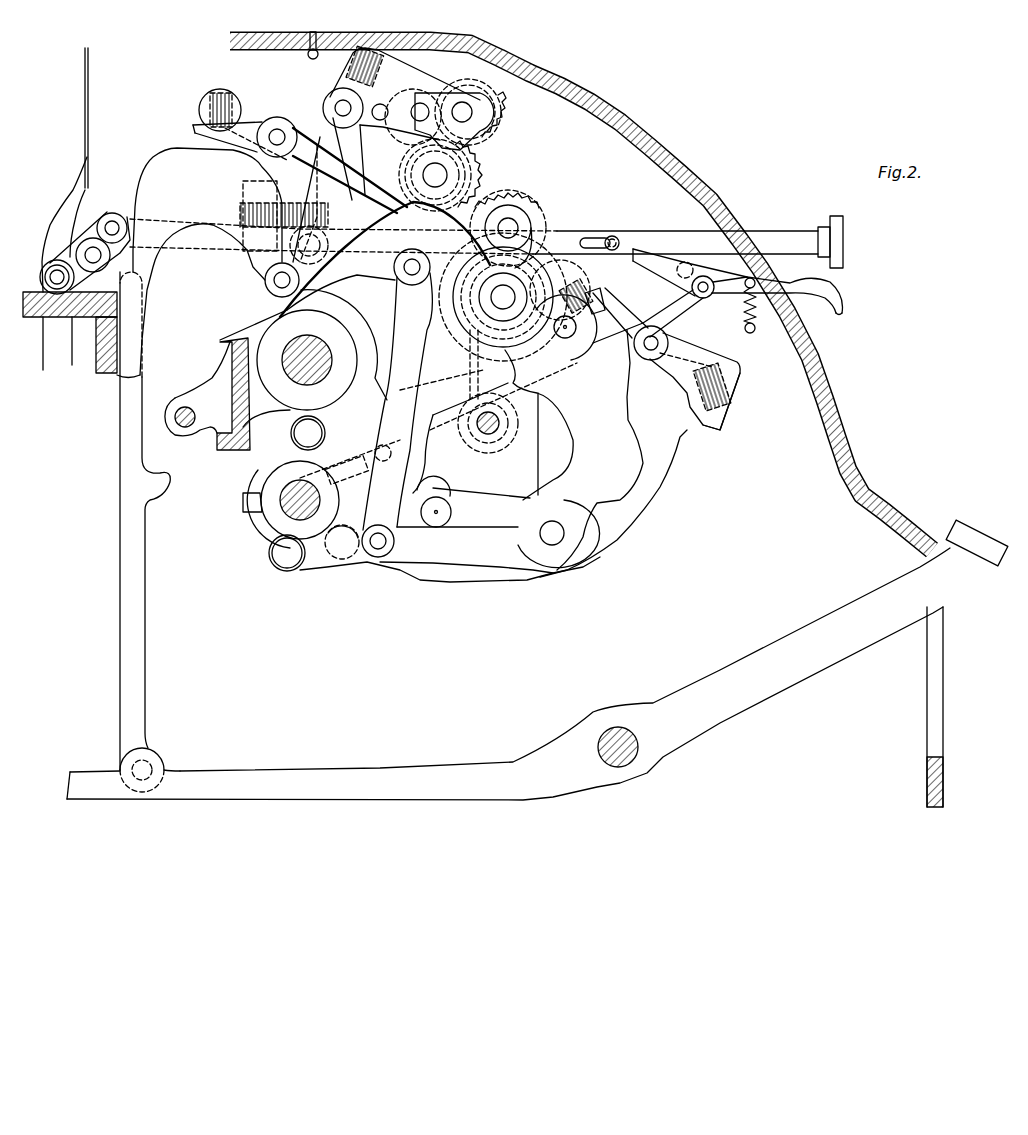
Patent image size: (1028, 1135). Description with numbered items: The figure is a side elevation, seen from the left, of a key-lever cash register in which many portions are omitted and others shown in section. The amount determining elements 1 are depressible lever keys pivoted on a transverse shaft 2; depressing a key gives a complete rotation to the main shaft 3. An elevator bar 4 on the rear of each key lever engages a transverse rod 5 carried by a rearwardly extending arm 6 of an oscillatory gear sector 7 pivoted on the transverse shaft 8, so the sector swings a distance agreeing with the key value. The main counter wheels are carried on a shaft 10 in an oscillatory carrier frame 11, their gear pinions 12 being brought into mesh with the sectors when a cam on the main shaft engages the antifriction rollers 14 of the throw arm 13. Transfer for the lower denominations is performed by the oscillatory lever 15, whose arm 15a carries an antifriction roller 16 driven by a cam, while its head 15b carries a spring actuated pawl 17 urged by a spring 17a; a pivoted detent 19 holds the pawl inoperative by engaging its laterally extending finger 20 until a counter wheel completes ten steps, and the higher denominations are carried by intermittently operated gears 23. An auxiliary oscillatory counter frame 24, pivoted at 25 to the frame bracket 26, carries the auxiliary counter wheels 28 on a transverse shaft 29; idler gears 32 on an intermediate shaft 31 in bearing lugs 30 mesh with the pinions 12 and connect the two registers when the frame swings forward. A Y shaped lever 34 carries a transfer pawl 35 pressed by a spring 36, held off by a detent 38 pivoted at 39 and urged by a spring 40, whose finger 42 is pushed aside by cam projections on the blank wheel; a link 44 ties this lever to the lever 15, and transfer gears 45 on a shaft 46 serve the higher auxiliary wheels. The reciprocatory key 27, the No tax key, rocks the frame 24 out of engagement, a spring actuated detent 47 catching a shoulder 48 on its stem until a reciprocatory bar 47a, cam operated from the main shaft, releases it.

The amount determining elements 1 is at (785, 642).
The transverse shaft 2 is at (636, 742).
The main shaft 3 is at (282, 508).
The elevator bar 4 is at (133, 646).
The transverse rod 5 is at (184, 406).
The rearwardly extending arm 6 is at (201, 397).
The oscillatory gear sector 7 is at (470, 417).
The transverse shaft 8 is at (326, 364).
The shaft 10 is at (494, 303).
The oscillatory carrier frame 11 is at (620, 427).
The gear pinions 12 is at (500, 330).
The throw arm 13 is at (470, 578).
The antifriction rollers 14 is at (325, 430).
The oscillatory lever 15 is at (660, 478).
The arm 15a is at (430, 560).
The head 15b is at (722, 420).
The antifriction roller 16 is at (347, 560).
The spring actuated pawl 17 is at (600, 340).
The spring 17a is at (727, 387).
The pivoted detent 19 is at (596, 292).
The laterally extending finger 20 is at (570, 287).
The intermittently operated gears 23 is at (610, 345).
The auxiliary oscillatory counter frame 24 is at (338, 78).
The pivot 25 is at (265, 283).
The frame bracket 26 is at (157, 273).
The reciprocatory key 27 is at (845, 243).
The counter wheels 28 is at (483, 164).
The transverse shaft 29 is at (448, 175).
The bearing lugs 30 is at (516, 216).
The intermediate shaft 31 is at (518, 228).
The idler gears 32 is at (530, 192).
The Y shaped lever 34 is at (253, 118).
The transfer pawl 35 is at (311, 189).
The spring 36 is at (230, 100).
The detent 38 is at (333, 100).
The pivot 39 is at (420, 95).
The spring 40 is at (385, 75).
The finger 42 is at (388, 120).
The link 44 is at (393, 390).
The gears 45 is at (492, 134).
The shaft 46 is at (473, 112).
The spring actuated detent 47 is at (843, 291).
The reciprocatory bar 47a is at (675, 312).
The shoulder 48 is at (630, 241).